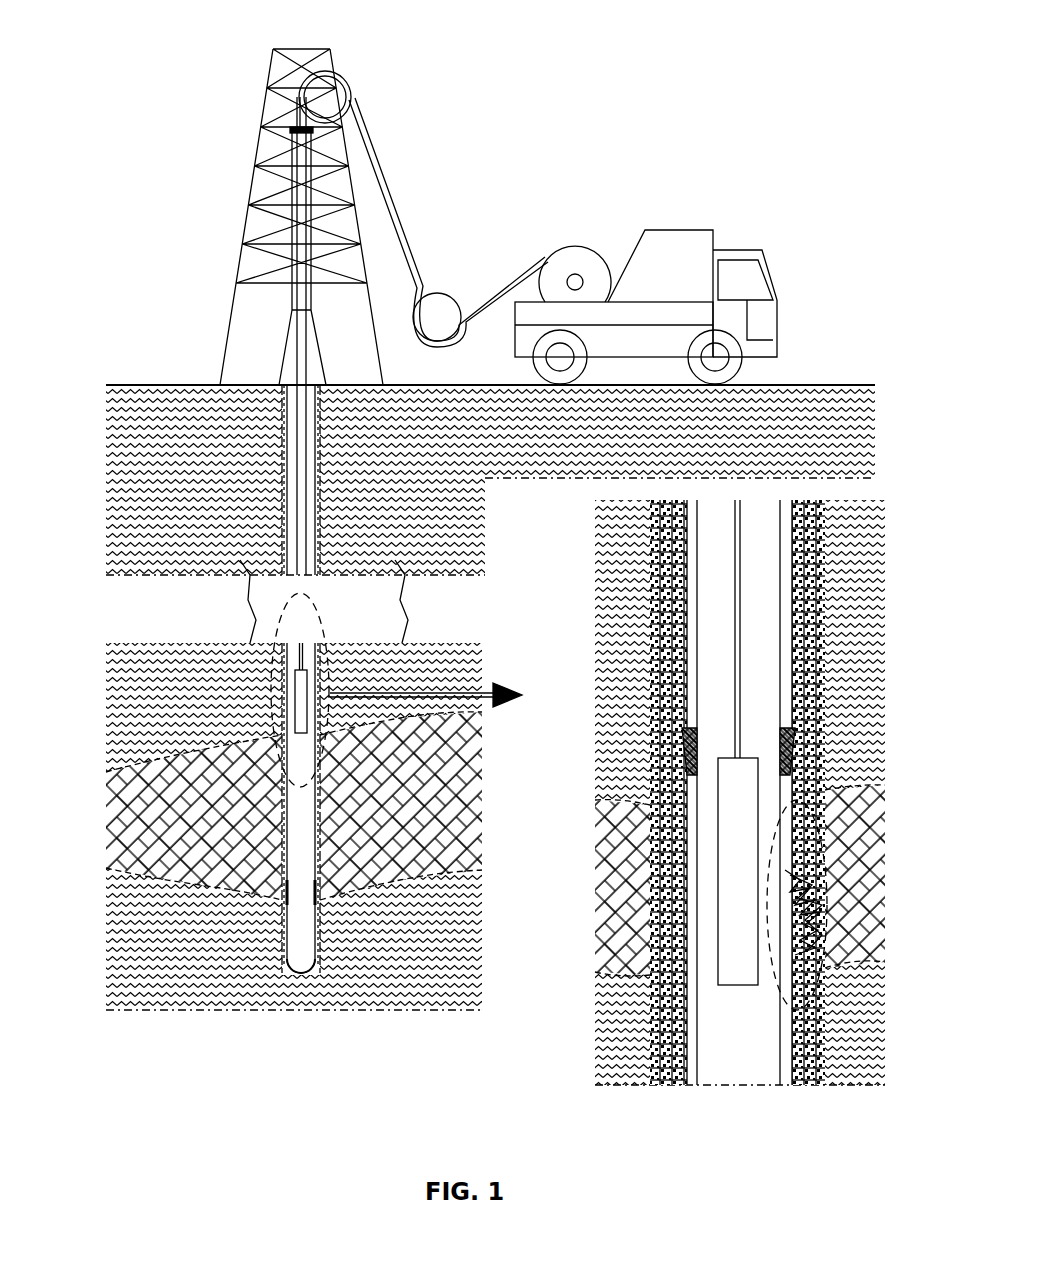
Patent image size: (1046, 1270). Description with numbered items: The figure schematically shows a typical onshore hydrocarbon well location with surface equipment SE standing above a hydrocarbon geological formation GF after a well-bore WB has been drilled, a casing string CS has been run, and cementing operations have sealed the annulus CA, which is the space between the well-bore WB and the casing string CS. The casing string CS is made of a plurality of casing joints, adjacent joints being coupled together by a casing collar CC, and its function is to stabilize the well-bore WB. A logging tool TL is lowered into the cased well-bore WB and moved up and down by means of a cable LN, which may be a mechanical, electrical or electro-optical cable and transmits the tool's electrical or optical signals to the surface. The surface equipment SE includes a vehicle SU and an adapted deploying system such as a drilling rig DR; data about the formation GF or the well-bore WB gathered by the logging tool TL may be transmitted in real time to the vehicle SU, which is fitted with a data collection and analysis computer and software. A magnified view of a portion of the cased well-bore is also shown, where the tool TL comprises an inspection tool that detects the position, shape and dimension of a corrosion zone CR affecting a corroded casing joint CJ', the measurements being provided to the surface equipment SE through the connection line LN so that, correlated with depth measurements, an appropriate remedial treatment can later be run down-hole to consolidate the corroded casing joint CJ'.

The surface equipment SE is at (518, 112).
The drilling rig DR is at (258, 138).
The cable LN is at (403, 256).
The vehicle SU is at (645, 237).
The well-bore WB is at (280, 452).
The annulus CA is at (280, 506).
The logging tool TL is at (297, 688).
The hydrocarbon geological formation GF is at (118, 768).
The casing string CS is at (300, 960).
The casing collar CC is at (685, 740).
The corrosion zone CR is at (768, 876).
The corroded casing joint CJ' is at (670, 792).